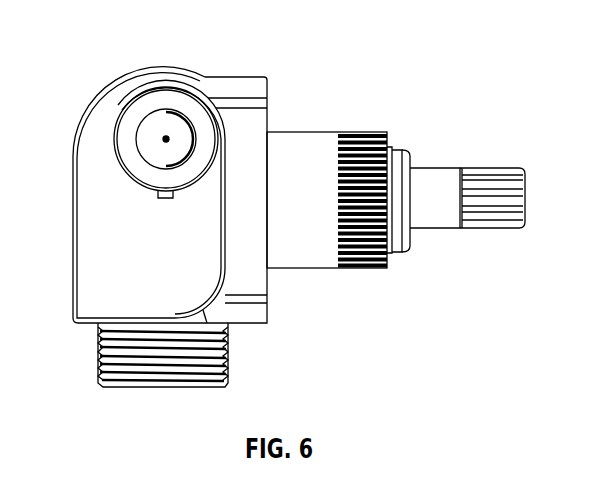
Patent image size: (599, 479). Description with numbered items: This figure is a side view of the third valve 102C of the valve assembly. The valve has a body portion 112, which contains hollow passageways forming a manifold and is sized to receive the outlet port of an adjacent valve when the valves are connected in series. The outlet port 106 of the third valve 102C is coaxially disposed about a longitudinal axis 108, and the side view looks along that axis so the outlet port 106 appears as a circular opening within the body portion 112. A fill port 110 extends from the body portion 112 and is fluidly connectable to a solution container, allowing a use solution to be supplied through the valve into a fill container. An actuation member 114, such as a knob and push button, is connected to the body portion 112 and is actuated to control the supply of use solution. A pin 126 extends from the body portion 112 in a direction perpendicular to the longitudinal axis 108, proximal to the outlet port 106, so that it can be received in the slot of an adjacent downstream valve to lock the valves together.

The third valve 102C is at (283, 66).
The body portion 112 is at (107, 97).
The outlet port 106 is at (220, 118).
The longitudinal axis 108 is at (167, 141).
The pin 126 is at (162, 198).
The fill port 110 is at (227, 358).
The actuation member 114 is at (440, 168).